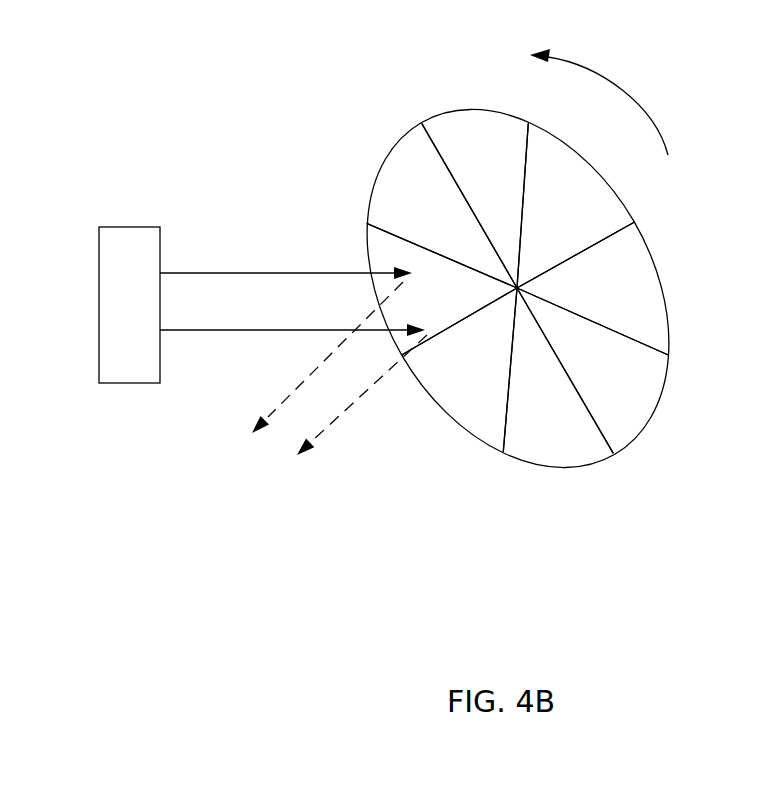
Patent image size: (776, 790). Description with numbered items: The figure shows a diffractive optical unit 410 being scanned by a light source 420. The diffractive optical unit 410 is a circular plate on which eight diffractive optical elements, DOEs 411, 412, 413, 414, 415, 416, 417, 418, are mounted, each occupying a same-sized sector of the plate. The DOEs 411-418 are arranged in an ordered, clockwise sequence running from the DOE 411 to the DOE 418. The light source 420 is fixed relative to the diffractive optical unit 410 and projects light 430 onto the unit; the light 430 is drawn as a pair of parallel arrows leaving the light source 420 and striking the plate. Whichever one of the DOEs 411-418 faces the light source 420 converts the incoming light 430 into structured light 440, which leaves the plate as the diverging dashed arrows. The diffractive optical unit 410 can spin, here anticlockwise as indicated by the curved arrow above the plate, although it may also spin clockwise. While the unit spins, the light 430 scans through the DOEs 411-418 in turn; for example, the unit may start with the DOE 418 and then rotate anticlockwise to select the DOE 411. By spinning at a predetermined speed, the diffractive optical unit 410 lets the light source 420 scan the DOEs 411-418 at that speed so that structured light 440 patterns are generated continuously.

The diffractive optical unit 410 is at (628, 387).
The diffractive optical element (DOE) 411 is at (405, 226).
The diffractive optical element (DOE) 412 is at (468, 200).
The diffractive optical element (DOE) 413 is at (543, 232).
The diffractive optical element (DOE) 414 is at (583, 302).
The diffractive optical element (DOE) 415 is at (573, 382).
The diffractive optical element (DOE) 416 is at (522, 412).
The diffractive optical element (DOE) 417 is at (452, 384).
The diffractive optical element (DOE) 418 is at (405, 300).
The light source 420 is at (130, 383).
The light 430 is at (270, 330).
The structured light 440 is at (287, 395).